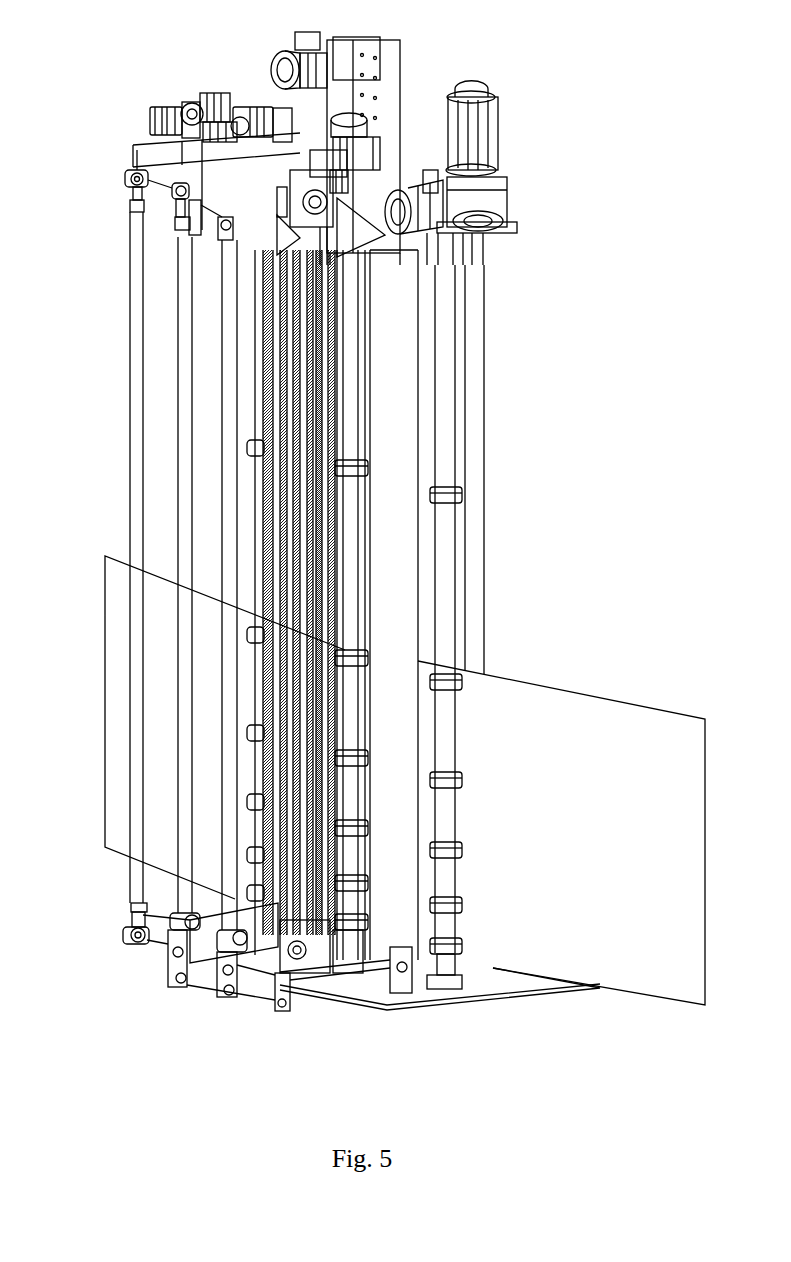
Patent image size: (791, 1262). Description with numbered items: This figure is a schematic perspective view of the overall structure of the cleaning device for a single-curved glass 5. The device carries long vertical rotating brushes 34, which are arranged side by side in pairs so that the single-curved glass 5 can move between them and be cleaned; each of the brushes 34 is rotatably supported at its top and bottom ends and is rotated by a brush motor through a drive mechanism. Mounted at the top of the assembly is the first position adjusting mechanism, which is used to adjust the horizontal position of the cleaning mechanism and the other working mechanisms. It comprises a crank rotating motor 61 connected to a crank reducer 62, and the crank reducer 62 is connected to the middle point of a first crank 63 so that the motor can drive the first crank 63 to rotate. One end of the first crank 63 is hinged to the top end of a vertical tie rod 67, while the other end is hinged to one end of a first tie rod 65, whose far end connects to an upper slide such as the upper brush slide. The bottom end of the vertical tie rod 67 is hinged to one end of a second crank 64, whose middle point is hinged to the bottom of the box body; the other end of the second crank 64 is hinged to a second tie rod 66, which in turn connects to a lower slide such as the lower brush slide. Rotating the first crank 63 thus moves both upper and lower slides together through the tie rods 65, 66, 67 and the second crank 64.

The single-curved glass 5 is at (105, 702).
The brushes 34 is at (395, 393).
The crank rotating motor 61 is at (198, 92).
The crank reducer 62 is at (133, 147).
The first crank 63 is at (133, 188).
The second crank 64 is at (135, 918).
The first tie rod 65 is at (190, 228).
The second tie rod 66 is at (207, 975).
The vertical tie rod 67 is at (130, 442).